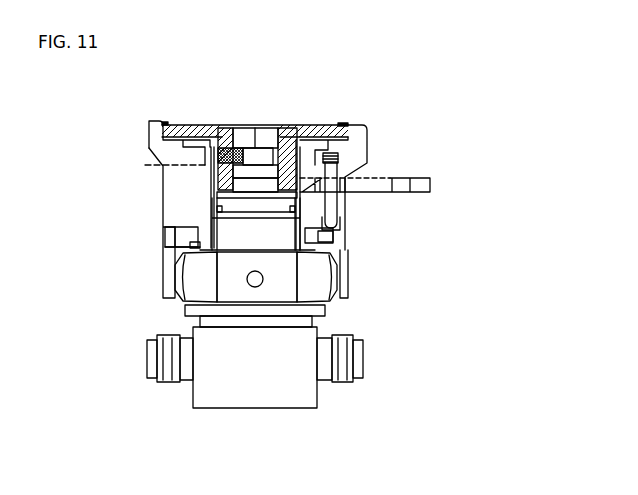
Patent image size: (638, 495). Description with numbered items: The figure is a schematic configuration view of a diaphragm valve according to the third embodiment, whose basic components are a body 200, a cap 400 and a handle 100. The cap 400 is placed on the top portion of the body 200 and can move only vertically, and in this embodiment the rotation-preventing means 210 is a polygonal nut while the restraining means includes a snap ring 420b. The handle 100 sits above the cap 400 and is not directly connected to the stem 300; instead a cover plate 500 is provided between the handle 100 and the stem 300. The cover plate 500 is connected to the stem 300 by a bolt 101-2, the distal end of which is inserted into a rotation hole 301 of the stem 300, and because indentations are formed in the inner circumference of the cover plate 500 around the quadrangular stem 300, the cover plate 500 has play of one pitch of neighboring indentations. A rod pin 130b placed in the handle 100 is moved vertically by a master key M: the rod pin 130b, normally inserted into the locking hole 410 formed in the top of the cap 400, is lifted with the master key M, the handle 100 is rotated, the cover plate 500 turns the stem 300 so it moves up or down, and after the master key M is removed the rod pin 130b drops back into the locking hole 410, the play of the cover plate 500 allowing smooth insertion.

The handle 100 is at (178, 193).
The bolt 101-2 is at (165, 165).
The cover plate 500 is at (223, 127).
The stem 300 is at (268, 134).
The rotation hole 301 is at (294, 130).
The master key M is at (388, 181).
The rod pin 130b is at (332, 209).
The locking hole 410 is at (337, 233).
The snap ring 420b is at (174, 247).
The cap 400 is at (173, 265).
The rotation-preventing means 210 is at (195, 287).
The body 200 is at (291, 397).